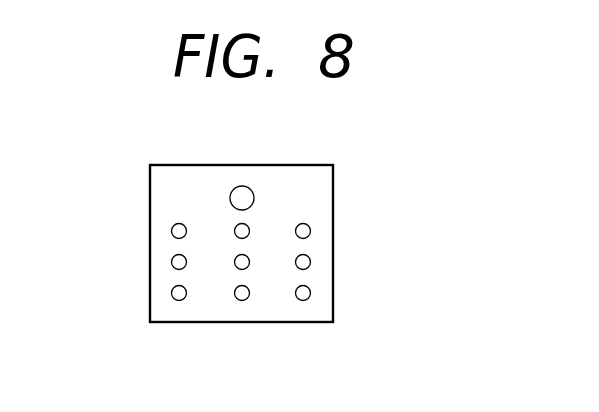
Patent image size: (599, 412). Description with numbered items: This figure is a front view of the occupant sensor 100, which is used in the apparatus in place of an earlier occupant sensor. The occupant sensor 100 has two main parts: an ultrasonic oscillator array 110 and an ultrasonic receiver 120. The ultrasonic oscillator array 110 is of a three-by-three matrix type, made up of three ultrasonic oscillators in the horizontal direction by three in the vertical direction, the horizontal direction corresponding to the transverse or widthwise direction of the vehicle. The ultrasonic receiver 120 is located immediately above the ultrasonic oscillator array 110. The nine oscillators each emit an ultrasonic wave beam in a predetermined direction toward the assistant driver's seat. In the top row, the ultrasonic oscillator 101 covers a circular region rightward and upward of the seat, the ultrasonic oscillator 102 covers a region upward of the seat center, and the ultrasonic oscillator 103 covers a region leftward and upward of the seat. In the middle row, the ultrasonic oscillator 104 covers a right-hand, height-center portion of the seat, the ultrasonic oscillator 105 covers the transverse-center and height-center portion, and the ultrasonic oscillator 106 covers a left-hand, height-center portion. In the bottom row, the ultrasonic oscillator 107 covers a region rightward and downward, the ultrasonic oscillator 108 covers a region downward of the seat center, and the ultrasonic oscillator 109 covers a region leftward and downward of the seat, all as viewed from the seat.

The occupant sensor 100 is at (364, 152).
The ultrasonic oscillator array 110 is at (367, 337).
The ultrasonic receiver 120 is at (244, 187).
The ultrasonic oscillator 101 is at (172, 231).
The ultrasonic oscillator 102 is at (235, 231).
The ultrasonic oscillator 103 is at (311, 231).
The ultrasonic oscillator 104 is at (172, 262).
The ultrasonic oscillator 105 is at (249, 267).
The ultrasonic oscillator 106 is at (311, 262).
The ultrasonic oscillator 107 is at (172, 293).
The ultrasonic oscillator 108 is at (240, 300).
The ultrasonic oscillator 109 is at (311, 293).